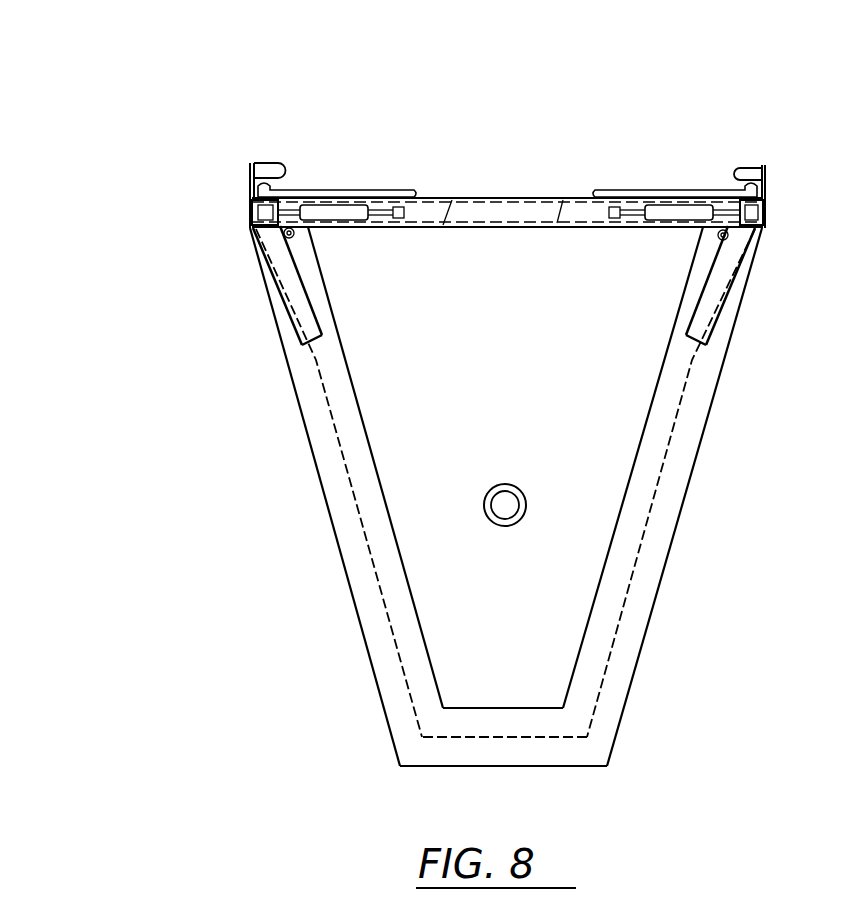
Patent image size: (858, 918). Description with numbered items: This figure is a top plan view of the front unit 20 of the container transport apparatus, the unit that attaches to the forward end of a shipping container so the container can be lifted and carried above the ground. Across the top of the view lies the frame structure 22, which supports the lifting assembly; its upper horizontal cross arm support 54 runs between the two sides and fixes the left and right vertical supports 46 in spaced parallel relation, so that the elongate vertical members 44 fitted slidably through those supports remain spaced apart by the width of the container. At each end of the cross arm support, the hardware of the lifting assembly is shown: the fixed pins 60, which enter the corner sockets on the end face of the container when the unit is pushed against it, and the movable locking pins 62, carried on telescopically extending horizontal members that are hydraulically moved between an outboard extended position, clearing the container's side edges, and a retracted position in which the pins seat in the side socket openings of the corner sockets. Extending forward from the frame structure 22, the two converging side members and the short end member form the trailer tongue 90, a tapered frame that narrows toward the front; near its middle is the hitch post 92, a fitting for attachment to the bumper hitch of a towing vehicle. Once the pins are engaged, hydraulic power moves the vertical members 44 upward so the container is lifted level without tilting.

The front unit 20 is at (482, 146).
The frame structure 22 is at (652, 540).
The elongate vertical member 44 is at (310, 204).
The vertical support 46 is at (250, 216).
The upper horizontal cross arm support 54 is at (527, 216).
The fixed pin 60 is at (312, 188).
The movable locking pin 62 is at (278, 167).
The trailer tongue 90 is at (372, 636).
The hitch post 92 is at (492, 525).